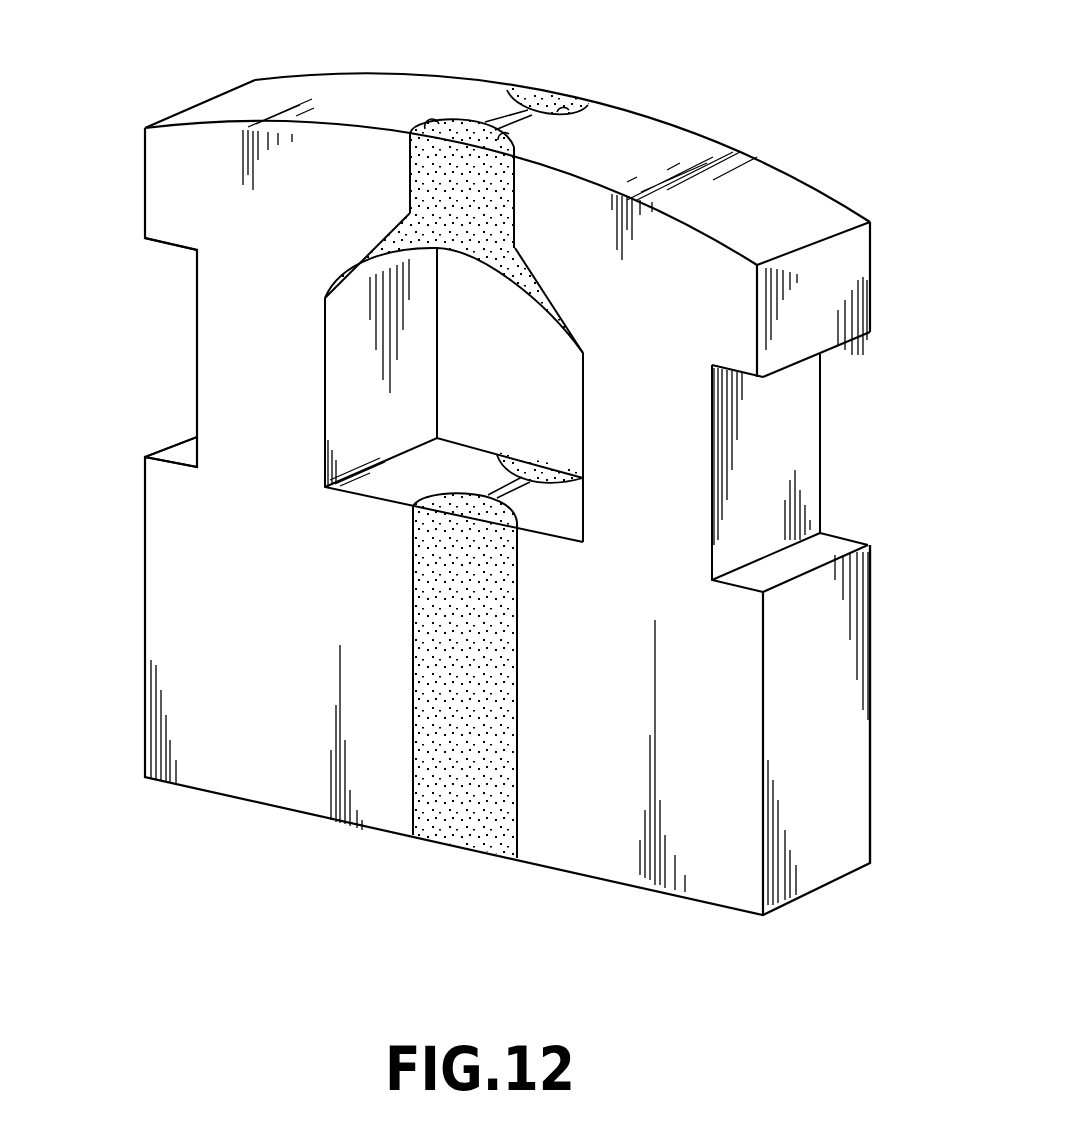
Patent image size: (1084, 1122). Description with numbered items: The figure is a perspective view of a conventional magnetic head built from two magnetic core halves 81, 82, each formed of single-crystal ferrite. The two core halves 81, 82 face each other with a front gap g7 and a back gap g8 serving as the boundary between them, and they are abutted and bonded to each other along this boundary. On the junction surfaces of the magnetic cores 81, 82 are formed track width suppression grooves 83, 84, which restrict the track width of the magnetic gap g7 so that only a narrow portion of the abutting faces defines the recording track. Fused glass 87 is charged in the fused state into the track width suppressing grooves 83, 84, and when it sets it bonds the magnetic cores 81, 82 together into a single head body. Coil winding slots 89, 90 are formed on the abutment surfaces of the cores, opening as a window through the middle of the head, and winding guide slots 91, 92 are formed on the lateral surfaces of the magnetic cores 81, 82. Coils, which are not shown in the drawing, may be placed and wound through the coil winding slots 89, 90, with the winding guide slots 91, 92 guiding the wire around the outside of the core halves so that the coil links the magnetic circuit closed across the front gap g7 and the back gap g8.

The magnetic core half 81 is at (900, 618).
The magnetic core half 82 is at (120, 638).
The track width suppression groove 83 is at (505, 140).
The track width suppression groove 84 is at (527, 88).
The fused glass 87 is at (472, 240).
The coil winding slot 89 is at (577, 407).
The coil winding slot 90 is at (338, 392).
The winding guide slot 91 is at (803, 433).
The winding guide slot 92 is at (197, 268).
The front gap g7 is at (496, 115).
The back gap g8 is at (498, 486).